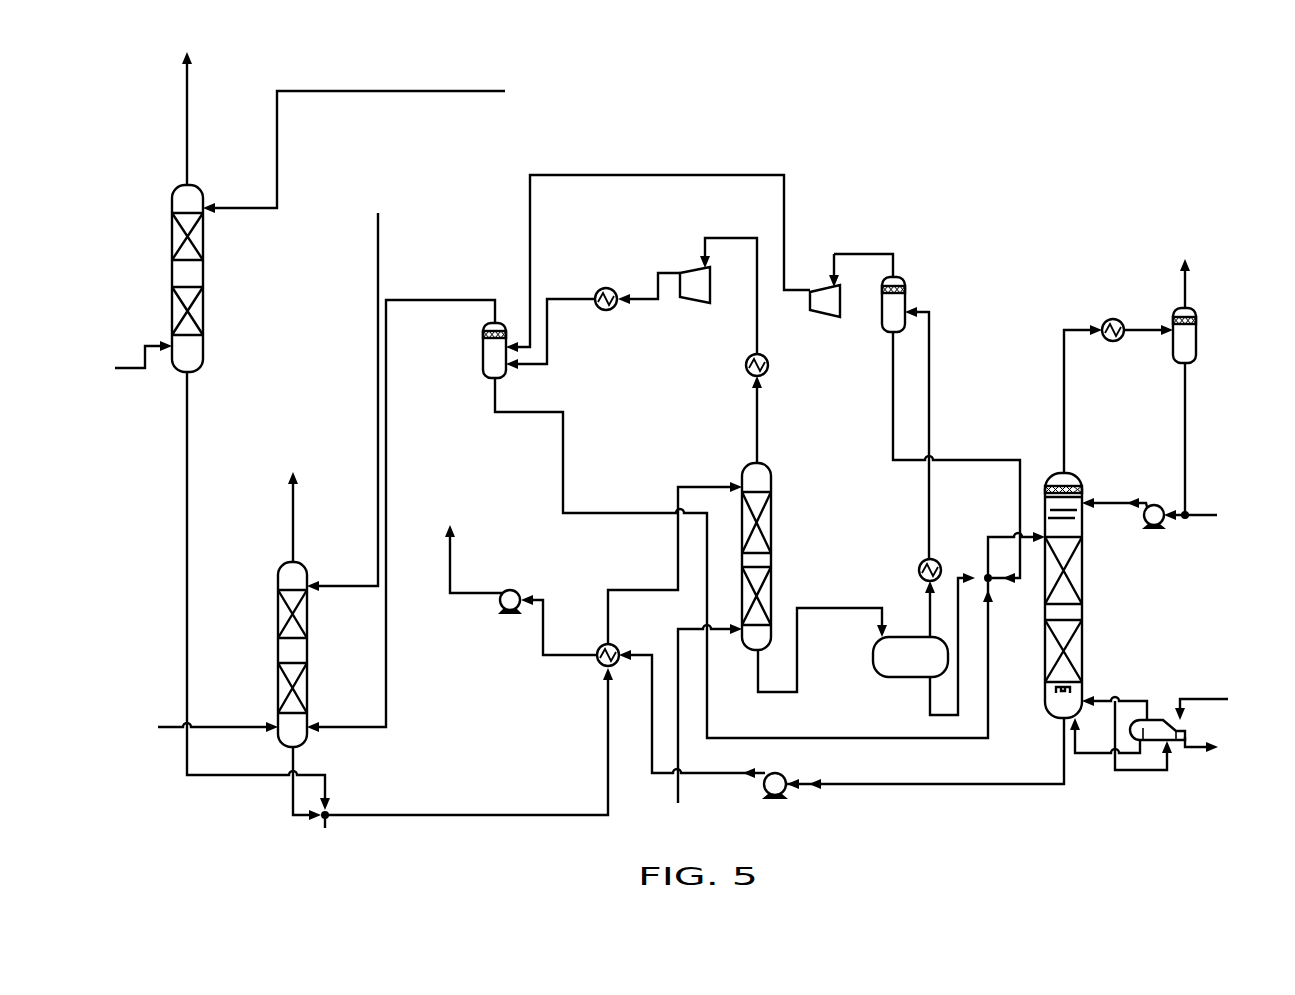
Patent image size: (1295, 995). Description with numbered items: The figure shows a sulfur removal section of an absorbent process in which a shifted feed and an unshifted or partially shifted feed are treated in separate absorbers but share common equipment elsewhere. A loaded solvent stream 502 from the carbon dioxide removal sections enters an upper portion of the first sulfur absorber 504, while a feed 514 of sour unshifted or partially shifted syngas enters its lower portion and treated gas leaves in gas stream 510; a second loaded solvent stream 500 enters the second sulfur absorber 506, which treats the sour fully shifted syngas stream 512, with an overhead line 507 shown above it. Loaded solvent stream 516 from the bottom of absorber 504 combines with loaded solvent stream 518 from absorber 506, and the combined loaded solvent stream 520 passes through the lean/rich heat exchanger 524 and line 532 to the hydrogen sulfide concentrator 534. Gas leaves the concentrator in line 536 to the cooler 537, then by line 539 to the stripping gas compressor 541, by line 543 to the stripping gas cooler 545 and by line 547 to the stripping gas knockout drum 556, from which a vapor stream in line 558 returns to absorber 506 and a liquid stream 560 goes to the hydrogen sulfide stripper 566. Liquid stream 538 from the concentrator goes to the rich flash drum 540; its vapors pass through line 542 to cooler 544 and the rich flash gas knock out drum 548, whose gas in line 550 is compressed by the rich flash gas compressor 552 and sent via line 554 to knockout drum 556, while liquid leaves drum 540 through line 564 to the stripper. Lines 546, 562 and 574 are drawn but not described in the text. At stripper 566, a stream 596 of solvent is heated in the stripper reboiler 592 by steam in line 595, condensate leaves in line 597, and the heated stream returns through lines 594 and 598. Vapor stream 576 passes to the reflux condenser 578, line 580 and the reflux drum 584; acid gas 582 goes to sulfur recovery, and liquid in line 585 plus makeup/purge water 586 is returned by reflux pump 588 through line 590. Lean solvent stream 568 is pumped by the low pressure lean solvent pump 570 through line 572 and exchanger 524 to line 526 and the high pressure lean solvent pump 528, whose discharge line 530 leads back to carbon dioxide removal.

The loaded solvent stream 500 is at (381, 232).
The loaded solvent stream 502 is at (445, 91).
The first sulfur absorber 504 is at (206, 259).
The second sulfur absorber 506 is at (310, 659).
The overhead vent line 507 is at (296, 499).
The gas stream 510 is at (190, 100).
The sour fully shifted syngas stream 512 is at (228, 726).
The feed 514 is at (133, 368).
The loaded solvent stream 516 is at (190, 460).
The loaded solvent stream 518 is at (296, 760).
The combined loaded solvent stream 520 is at (522, 812).
The lean/rich heat exchanger 524 is at (598, 666).
The line 526 is at (545, 613).
The high pressure lean solvent pump 528 is at (512, 583).
The product line 530 is at (447, 575).
The line 532 is at (676, 545).
The hydrogen sulfide concentrator 534 is at (773, 535).
The line 536 is at (760, 447).
The cooler 537 is at (768, 362).
The liquid stream 538 is at (840, 606).
The line 539 is at (733, 236).
The rich flash drum 540 is at (872, 655).
The stripping gas compressor 541 is at (697, 303).
The line 542 is at (920, 630).
The line 543 is at (665, 270).
The cooler 544 is at (945, 568).
The stripping gas cooler 545 is at (600, 289).
The line 546 is at (932, 360).
The line 547 is at (550, 345).
The rich flash gas knock out drum 548 is at (906, 284).
The line 550 is at (883, 252).
The rich flash gas compressor 552 is at (826, 318).
The line 554 is at (707, 175).
The stripping gas knockout drum 556 is at (482, 360).
The line 558 is at (452, 299).
The liquid stream 560 is at (566, 490).
The line 562 is at (1008, 457).
The line 564 is at (927, 705).
The hydrogen sulfide stripper 566 is at (1083, 613).
The lean solvent stream 568 is at (923, 783).
The low pressure lean solvent pump 570 is at (782, 772).
The line 572 is at (720, 778).
The line 574 is at (675, 655).
The vapor stream 576 is at (1066, 420).
The reflux condenser 578 is at (1114, 345).
The line 580 is at (1139, 325).
The acid gas 582 is at (1188, 287).
The reflux drum 584 is at (1198, 345).
The line 585 is at (1188, 420).
The makeup/purge water 586 is at (1203, 518).
The reflux pump 588 is at (1155, 497).
The line 590 is at (1108, 508).
The stripper reboiler 592 is at (1160, 718).
The line 594 is at (1128, 692).
The line 595 is at (1217, 697).
The stream of solvent 596 is at (1140, 775).
The line 597 is at (1190, 751).
The line 598 is at (1082, 758).